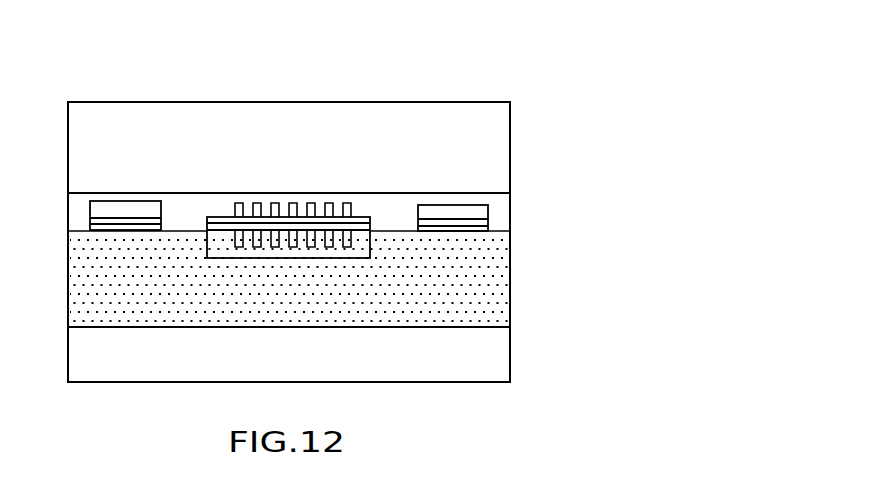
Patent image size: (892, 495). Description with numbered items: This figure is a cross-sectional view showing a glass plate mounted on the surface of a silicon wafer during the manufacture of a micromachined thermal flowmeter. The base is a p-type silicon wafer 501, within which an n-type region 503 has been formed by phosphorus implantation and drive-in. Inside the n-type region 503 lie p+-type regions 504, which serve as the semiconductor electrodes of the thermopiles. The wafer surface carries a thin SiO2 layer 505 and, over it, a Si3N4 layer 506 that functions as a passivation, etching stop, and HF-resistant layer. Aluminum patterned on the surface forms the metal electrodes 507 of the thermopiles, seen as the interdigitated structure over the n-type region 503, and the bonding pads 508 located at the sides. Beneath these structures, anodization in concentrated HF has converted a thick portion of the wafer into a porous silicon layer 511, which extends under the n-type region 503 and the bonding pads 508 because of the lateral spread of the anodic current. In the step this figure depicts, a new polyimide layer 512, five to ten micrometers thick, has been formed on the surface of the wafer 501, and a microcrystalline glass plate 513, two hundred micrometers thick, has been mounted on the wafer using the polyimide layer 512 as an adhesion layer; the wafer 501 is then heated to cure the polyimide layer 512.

The silicon wafer 501 is at (483, 354).
The n-type region 503 is at (367, 255).
The p+-type regions 504 is at (350, 237).
The SiO2 layer 505 is at (482, 227).
The Si3N4 layer 506 is at (477, 221).
The metal electrodes 507 is at (240, 203).
The bonding pads 508 is at (455, 210).
The porous silicon layer 511 is at (77, 248).
The polyimide layer 512 is at (175, 207).
The microcrystalline glass plate 513 is at (105, 122).